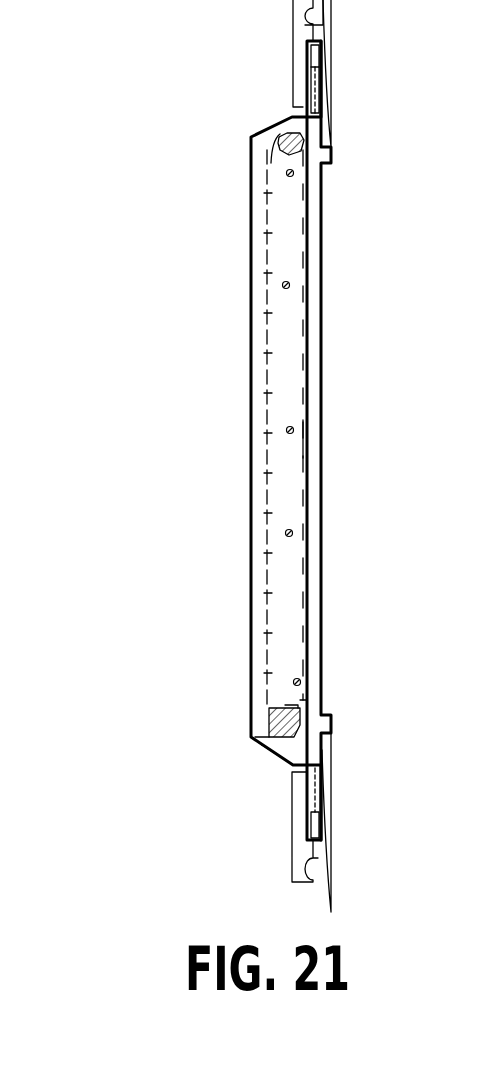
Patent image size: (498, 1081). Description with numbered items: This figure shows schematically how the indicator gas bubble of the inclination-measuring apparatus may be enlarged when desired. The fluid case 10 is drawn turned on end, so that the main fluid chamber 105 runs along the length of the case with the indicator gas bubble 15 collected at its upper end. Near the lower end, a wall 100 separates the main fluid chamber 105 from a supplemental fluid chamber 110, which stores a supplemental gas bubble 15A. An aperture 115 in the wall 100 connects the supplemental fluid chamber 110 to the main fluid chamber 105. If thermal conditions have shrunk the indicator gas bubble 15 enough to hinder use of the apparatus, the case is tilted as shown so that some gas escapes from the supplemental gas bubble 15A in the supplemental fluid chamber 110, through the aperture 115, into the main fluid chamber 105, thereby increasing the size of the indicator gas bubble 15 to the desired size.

The fluid case 10 is at (250, 346).
The indicator gas bubble 15 is at (284, 136).
The supplemental gas bubble 15A is at (270, 731).
The wall 100 is at (281, 702).
The main fluid chamber 105 is at (287, 582).
The supplemental fluid chamber 110 is at (293, 742).
The aperture 115 is at (300, 699).